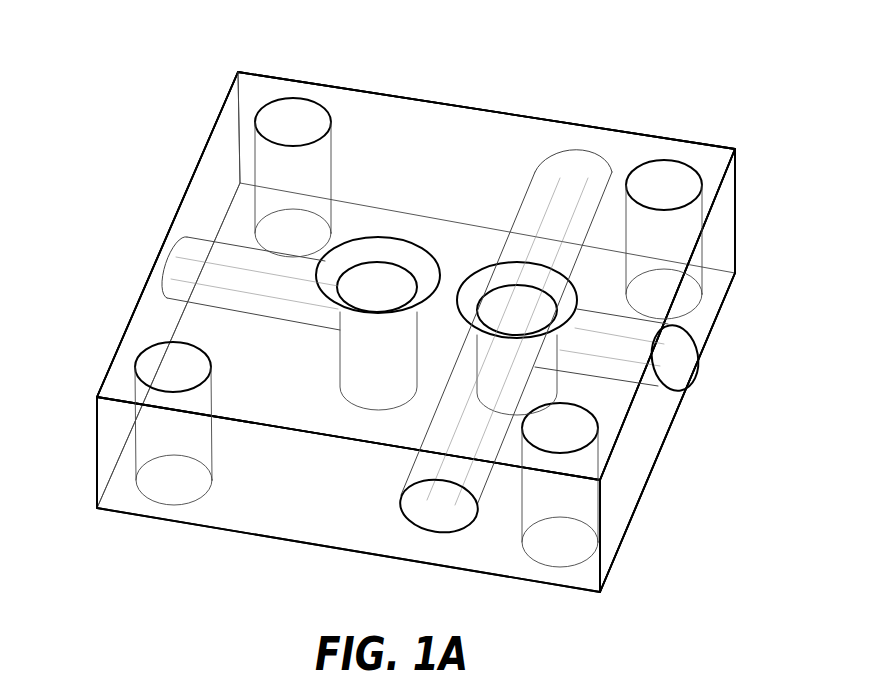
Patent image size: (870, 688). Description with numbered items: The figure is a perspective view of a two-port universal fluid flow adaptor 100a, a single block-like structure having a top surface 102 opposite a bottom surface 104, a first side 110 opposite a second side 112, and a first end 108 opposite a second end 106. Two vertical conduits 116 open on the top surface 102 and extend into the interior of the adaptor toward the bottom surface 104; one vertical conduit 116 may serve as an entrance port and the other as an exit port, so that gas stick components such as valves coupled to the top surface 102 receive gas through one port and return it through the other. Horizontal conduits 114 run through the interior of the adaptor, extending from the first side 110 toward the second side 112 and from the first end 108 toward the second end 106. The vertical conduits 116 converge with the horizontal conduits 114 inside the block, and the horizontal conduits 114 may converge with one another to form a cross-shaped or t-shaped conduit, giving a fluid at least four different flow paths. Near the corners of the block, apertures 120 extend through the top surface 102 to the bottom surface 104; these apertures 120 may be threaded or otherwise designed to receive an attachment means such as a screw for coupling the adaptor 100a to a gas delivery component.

The two-port universal fluid flow adaptor 100a is at (143, 106).
The top surface 102 is at (523, 137).
The bottom surface 104 is at (660, 460).
The second end 106 is at (252, 483).
The first end 108 is at (428, 99).
The first side 110 is at (723, 242).
The second side 112 is at (130, 313).
The horizontal conduit 114 is at (604, 152).
The vertical conduit 116 is at (373, 260).
The aperture 120 is at (300, 103).